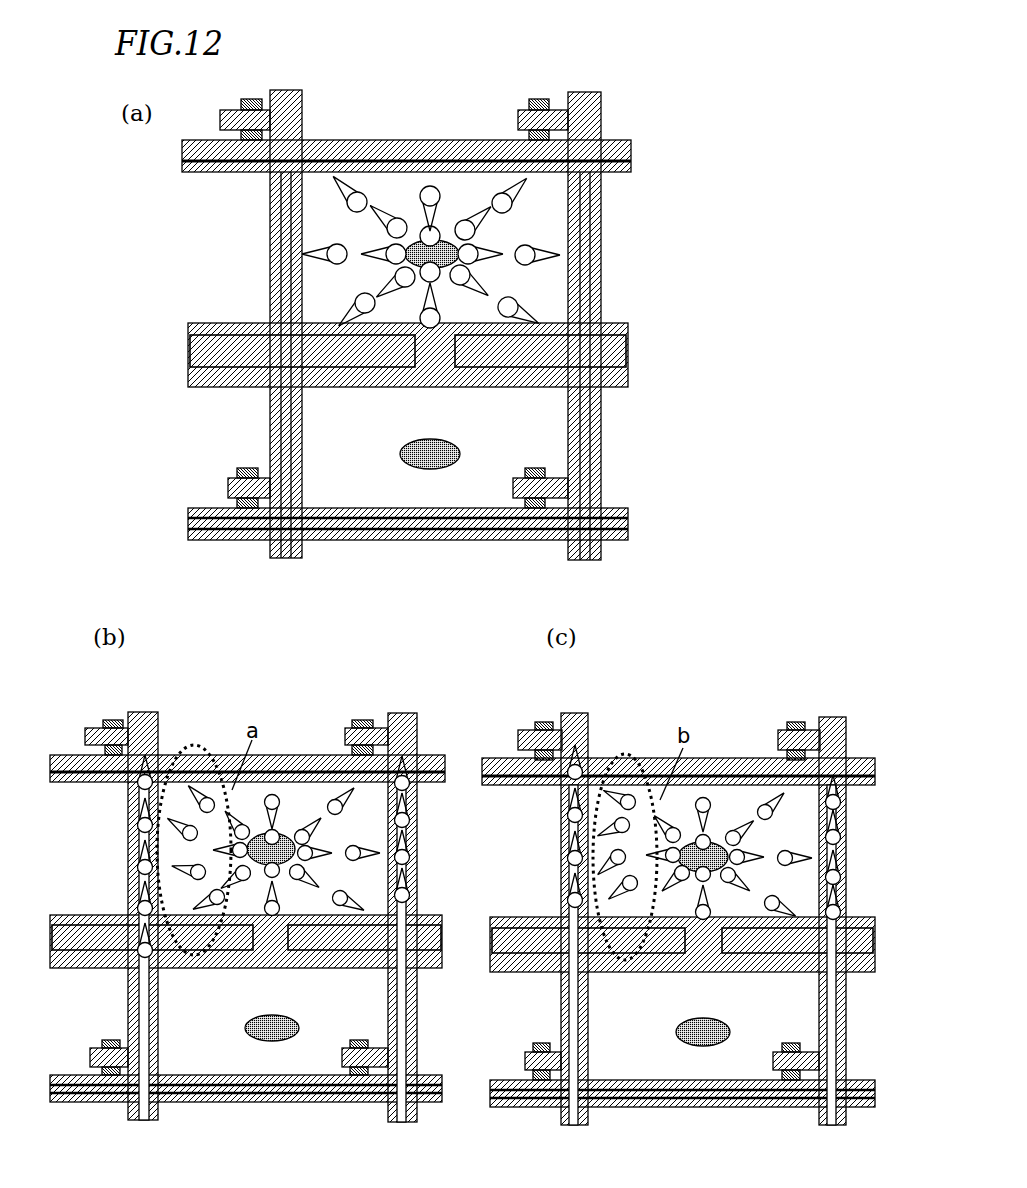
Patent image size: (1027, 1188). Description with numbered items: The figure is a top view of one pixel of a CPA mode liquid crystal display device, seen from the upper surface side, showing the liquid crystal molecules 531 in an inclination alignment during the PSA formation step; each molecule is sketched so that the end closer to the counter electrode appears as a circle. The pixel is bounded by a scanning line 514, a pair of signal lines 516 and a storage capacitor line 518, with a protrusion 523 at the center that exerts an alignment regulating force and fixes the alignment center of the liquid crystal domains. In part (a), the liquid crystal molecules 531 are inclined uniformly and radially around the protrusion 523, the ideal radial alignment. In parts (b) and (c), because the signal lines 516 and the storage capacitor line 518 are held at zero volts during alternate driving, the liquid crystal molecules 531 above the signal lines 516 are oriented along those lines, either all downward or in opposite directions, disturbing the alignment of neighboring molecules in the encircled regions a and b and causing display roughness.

The scanning line 514 is at (632, 155).
The signal line 516 is at (302, 113).
The storage capacitor line 518 is at (630, 352).
The protrusion 523 is at (445, 236).
The liquid crystal molecules 531 is at (548, 253).